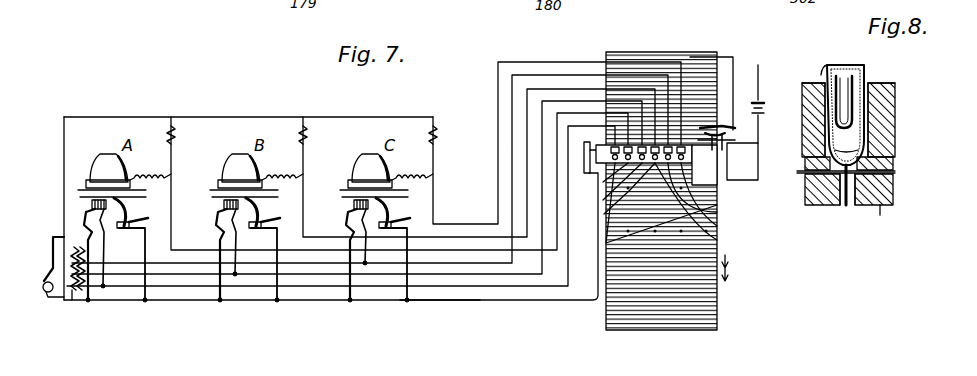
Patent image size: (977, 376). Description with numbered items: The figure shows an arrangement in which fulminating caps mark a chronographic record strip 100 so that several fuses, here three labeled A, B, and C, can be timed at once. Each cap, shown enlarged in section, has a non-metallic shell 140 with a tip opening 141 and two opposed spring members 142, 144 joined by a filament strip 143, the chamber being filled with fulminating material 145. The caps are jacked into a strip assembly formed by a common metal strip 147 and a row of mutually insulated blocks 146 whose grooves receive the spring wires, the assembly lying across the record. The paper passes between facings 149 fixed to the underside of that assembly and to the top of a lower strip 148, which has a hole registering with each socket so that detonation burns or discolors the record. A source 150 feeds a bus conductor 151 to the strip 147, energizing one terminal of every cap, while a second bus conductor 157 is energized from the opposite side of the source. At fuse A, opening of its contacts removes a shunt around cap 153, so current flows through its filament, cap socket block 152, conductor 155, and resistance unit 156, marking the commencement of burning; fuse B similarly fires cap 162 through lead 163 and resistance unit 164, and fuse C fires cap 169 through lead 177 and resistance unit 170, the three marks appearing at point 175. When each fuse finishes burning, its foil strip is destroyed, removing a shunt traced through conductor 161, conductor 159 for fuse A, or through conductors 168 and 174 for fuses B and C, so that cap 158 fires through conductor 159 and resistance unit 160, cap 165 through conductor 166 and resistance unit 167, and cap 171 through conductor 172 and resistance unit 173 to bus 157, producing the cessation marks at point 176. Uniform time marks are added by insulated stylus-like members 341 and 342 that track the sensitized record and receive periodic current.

In FIG. 7, the record strip 100 is at (712, 300).
In FIG. 8, the record strip 100 is at (797, 174).
In FIG. 8, the non-metallic shell 140 is at (851, 66).
In FIG. 8, the tip opening 141 is at (849, 206).
In FIG. 8, the spring member 142 is at (862, 78).
In FIG. 8, the filament strip 143 is at (893, 94).
In FIG. 8, the spring member 144 is at (821, 75).
In FIG. 8, the fulminating material 145 is at (848, 152).
In FIG. 7, the metal blocks 146 is at (733, 93).
In FIG. 8, the metal blocks 146 is at (896, 104).
In FIG. 7, the metal strip 147 is at (584, 158).
In FIG. 8, the metal strip 147 is at (805, 133).
In FIG. 8, the lower strip 148 is at (880, 206).
In FIG. 8, the facings 149 is at (898, 165).
In FIG. 7, the source of current 150 is at (44, 293).
In FIG. 7, the bus conductor 151 is at (446, 300).
In FIG. 7, the cap socket block 152 is at (603, 180).
In FIG. 7, the marking cap 153 is at (603, 198).
In FIG. 7, the conductor 155 is at (565, 222).
In FIG. 7, the resistance unit 156 is at (86, 300).
In FIG. 7, the bus conductor 157 is at (64, 172).
In FIG. 7, the cap 158 is at (604, 212).
In FIG. 7, the conductor 159 is at (557, 200).
In FIG. 7, the resistance unit 160 is at (176, 140).
In FIG. 7, the conductor 161 is at (150, 167).
In FIG. 7, the cap 162 is at (717, 240).
In FIG. 7, the conductor 163 is at (542, 190).
In FIG. 7, the resistance unit 164 is at (74, 292).
In FIG. 7, the cap 165 is at (717, 226).
In FIG. 7, the conductor 166 is at (527, 178).
In FIG. 7, the resistance unit 167 is at (308, 140).
In FIG. 7, the conductor 168 is at (282, 167).
In FIG. 7, the cap 169 is at (717, 212).
In FIG. 7, the resistance unit 170 is at (75, 262).
In FIG. 7, the cap 171 is at (717, 190).
In FIG. 7, the conductor 172 is at (498, 152).
In FIG. 7, the resistance unit 173 is at (438, 140).
In FIG. 7, the conductor 174 is at (412, 167).
In FIG. 7, the point 175 is at (620, 262).
In FIG. 7, the point 176 is at (606, 243).
In FIG. 7, the lead 177 is at (512, 165).
In FIG. 7, the stylus-like member 341 is at (730, 139).
In FIG. 7, the stylus-like member 342 is at (731, 125).